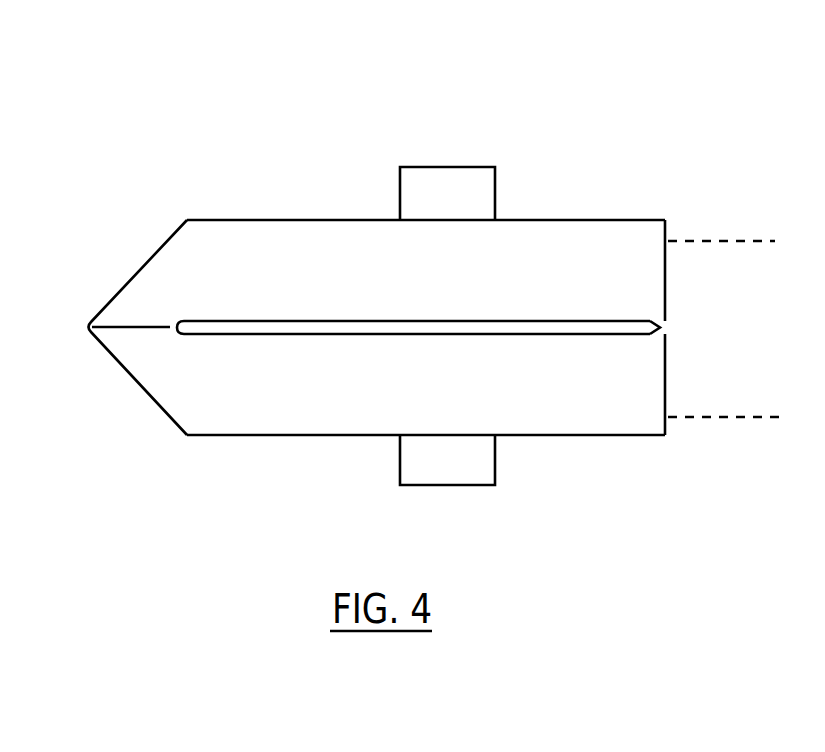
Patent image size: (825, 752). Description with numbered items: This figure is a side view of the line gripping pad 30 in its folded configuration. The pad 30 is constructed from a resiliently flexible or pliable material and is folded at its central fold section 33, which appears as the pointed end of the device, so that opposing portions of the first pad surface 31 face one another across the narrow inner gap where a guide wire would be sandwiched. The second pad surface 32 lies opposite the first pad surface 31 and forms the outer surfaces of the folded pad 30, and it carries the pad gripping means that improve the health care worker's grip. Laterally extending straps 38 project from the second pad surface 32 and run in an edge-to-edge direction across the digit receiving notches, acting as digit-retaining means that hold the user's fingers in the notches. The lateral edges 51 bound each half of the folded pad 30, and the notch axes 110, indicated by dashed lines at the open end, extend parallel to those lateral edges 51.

The line gripping pad 30 is at (463, 106).
The first pad surface 31 is at (657, 328).
The second pad surface 32 is at (344, 208).
The central fold section 33 is at (130, 273).
The laterally extending straps 38 is at (478, 185).
The lateral edges 51 is at (288, 237).
The notch axes 110 is at (750, 238).